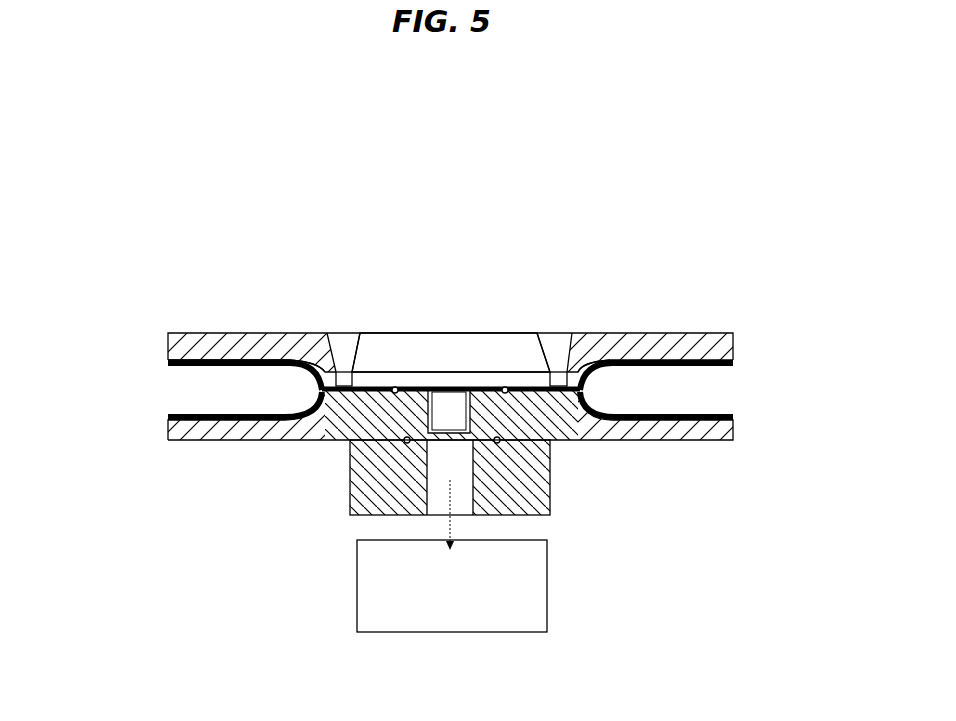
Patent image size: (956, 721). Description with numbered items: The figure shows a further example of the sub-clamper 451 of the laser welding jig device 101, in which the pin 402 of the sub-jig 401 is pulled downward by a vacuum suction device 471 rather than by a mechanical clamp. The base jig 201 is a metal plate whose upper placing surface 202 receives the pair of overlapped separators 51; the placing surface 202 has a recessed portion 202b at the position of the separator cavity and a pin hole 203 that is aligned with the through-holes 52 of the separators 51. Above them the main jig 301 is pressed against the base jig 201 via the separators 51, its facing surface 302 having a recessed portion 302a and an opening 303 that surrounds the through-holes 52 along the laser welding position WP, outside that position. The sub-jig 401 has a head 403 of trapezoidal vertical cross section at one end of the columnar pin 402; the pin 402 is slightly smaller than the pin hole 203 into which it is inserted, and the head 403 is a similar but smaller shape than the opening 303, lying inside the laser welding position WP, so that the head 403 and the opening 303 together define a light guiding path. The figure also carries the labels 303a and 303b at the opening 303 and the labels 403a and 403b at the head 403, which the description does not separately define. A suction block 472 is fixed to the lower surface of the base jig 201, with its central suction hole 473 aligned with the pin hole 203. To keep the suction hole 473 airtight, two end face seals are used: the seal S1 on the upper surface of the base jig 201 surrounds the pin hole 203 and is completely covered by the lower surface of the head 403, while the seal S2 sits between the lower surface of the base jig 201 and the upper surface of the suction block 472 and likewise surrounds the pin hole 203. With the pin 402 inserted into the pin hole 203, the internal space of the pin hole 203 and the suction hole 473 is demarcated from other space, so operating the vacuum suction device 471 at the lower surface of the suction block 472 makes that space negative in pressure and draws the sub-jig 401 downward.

The laser welding jig device 101 is at (617, 134).
The base jig 201 is at (735, 432).
The placing surface 202 is at (200, 414).
The recessed portion 202b is at (185, 414).
The pin hole 203 is at (408, 452).
The main jig 301 is at (738, 352).
The facing surface 302 is at (186, 372).
The recessed portion 302a is at (218, 376).
The opening 303 is at (560, 372).
The tapered surface 303a is at (343, 366).
The tapered surface 303b is at (336, 368).
The sub-jig 401 is at (475, 300).
The pin 402 is at (548, 513).
The head 403 is at (515, 333).
The tapered surface 403a is at (555, 333).
The tapered surface 403b is at (580, 340).
The sub-clamper 451 is at (303, 626).
The vacuum suction device 471 is at (548, 612).
The suction block 472 is at (555, 483).
The suction hole 473 is at (443, 487).
The separator 51 is at (715, 415).
The through-hole 52 is at (422, 387).
The seal S1 is at (548, 440).
The seal S2 is at (556, 483).
The laser welding position WP is at (386, 372).